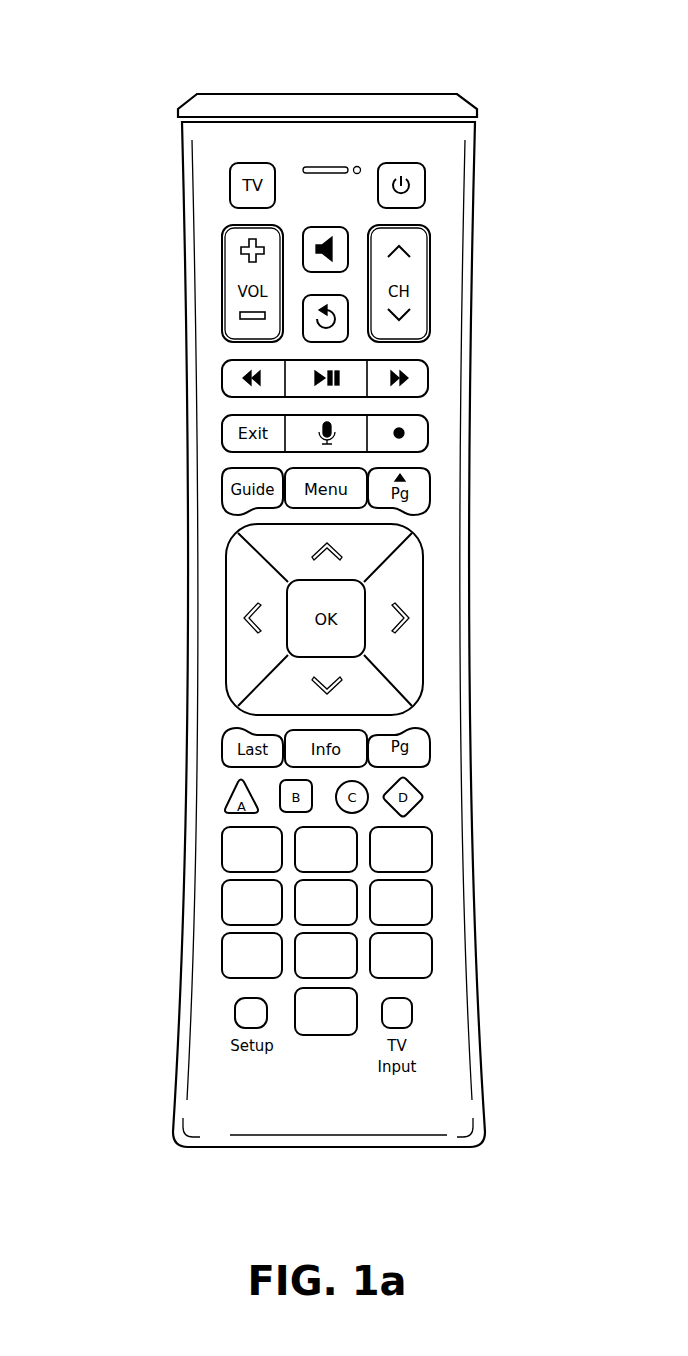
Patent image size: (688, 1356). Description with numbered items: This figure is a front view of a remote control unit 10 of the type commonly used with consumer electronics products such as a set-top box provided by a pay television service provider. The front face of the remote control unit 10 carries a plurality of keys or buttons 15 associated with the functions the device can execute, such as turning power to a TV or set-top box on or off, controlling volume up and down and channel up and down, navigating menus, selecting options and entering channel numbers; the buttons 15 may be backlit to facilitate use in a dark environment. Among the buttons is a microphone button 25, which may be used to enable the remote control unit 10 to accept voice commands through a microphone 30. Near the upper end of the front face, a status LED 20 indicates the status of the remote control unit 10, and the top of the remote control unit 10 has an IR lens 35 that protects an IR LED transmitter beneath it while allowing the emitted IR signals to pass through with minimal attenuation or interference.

The remote control unit 10 is at (186, 330).
The buttons 15 is at (423, 847).
The status LED 20 is at (314, 163).
The microphone button 25 is at (348, 433).
The microphone 30 is at (357, 164).
The IR lens 35 is at (268, 107).